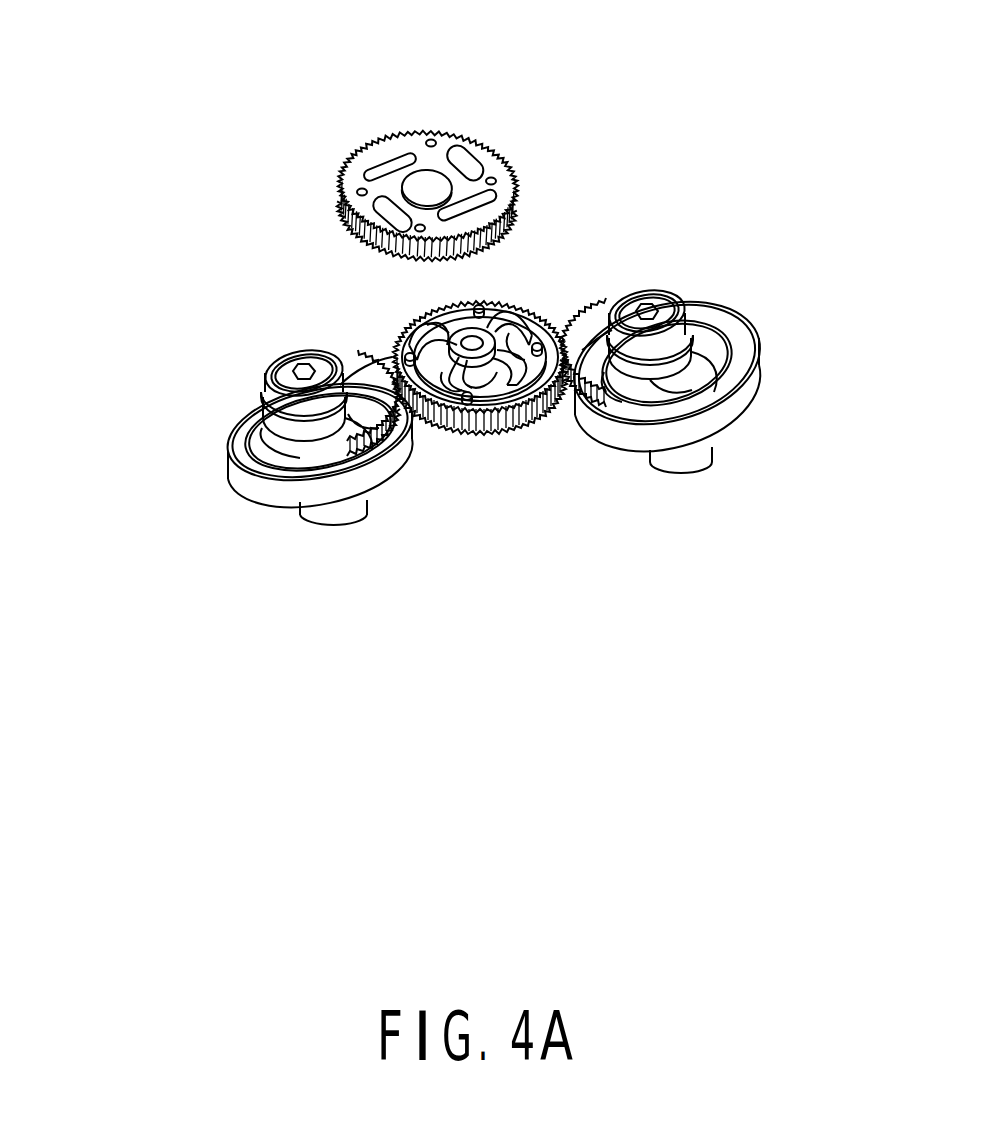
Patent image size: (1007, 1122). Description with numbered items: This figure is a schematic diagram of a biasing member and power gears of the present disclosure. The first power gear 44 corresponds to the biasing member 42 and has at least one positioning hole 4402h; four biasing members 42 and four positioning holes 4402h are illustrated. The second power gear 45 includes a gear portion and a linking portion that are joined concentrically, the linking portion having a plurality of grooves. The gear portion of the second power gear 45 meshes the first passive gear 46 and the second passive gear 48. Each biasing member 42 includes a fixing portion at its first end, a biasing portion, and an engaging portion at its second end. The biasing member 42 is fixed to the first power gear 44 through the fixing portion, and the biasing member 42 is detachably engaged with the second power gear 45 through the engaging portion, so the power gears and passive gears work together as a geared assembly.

The first power gear 44 is at (492, 165).
The positioning hole 4402h is at (364, 189).
The second power gear 45 is at (484, 440).
The biasing member 42 is at (498, 307).
The first passive gear 46 is at (597, 330).
The second passive gear 48 is at (366, 380).